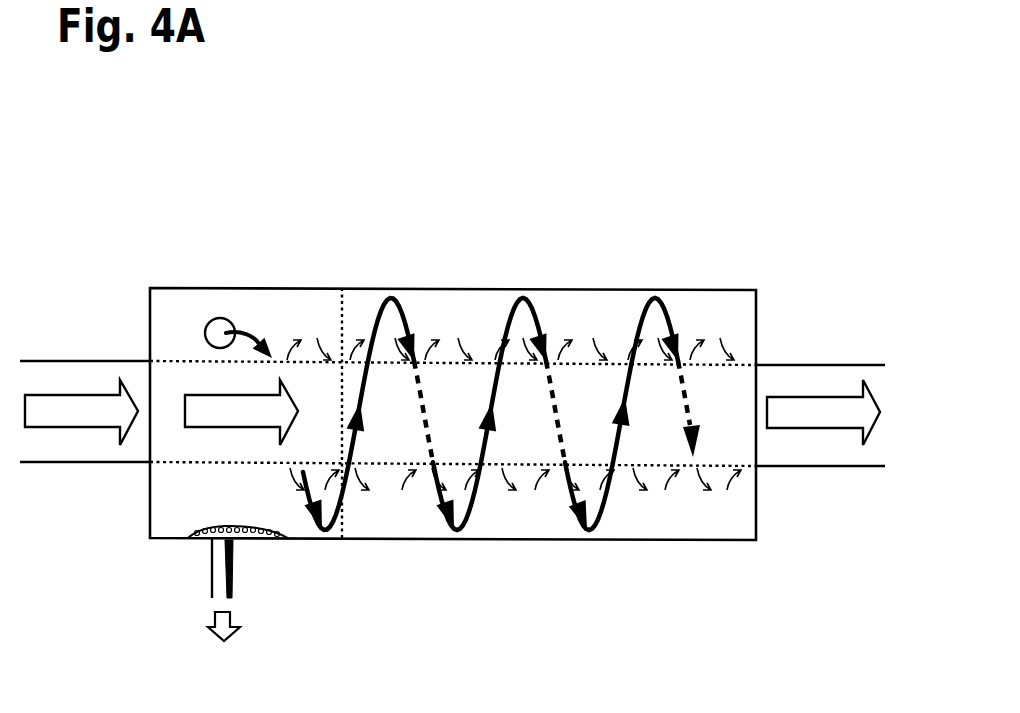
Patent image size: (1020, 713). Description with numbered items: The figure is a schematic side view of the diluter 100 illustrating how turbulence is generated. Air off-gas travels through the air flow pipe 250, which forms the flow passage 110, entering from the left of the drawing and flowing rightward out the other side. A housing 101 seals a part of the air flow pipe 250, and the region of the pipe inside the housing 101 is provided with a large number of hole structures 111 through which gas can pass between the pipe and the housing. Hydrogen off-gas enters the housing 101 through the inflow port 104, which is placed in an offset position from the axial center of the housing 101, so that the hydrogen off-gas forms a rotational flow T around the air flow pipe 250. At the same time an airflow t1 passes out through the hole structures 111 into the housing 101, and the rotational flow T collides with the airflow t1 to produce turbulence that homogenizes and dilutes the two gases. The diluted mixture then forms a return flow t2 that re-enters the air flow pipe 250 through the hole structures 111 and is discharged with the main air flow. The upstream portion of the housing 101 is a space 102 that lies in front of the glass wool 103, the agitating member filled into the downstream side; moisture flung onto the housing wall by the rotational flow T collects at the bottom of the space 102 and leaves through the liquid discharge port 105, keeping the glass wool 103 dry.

The diluter 100 is at (749, 622).
The housing 101 is at (741, 289).
The space 102 is at (310, 318).
The glass wool 103 is at (418, 313).
The inflow port 104 is at (213, 319).
The liquid discharge port 105 is at (237, 572).
The flow passage 110 is at (820, 368).
The hole structures 111 is at (615, 360).
The air flow pipe 250 is at (81, 361).
The rotational flow T is at (522, 291).
The airflow t1 is at (352, 340).
The return flow t2 is at (462, 343).